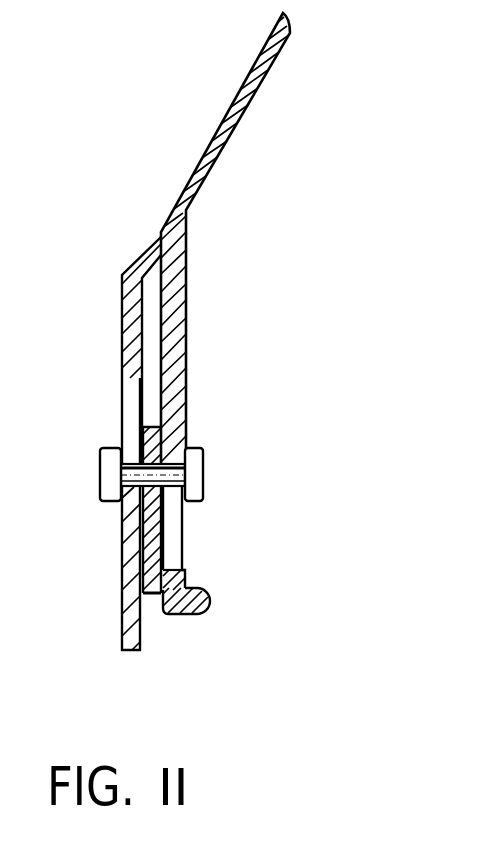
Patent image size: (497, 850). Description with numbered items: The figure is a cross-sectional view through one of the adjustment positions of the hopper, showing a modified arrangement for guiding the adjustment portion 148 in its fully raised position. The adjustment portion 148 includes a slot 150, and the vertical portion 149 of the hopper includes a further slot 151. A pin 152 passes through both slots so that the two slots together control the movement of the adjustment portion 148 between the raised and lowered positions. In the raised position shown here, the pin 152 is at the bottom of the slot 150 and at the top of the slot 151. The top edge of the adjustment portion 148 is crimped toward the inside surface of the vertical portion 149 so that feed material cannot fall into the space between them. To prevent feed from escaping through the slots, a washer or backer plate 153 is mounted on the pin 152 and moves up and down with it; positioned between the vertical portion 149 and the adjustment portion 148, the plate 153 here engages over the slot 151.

The adjustment portion 148 is at (118, 592).
The vertical portion 149 is at (192, 370).
The slot 150 is at (133, 384).
The slot 151 is at (172, 562).
The pin 152 is at (192, 474).
The backer plate 153 is at (157, 595).